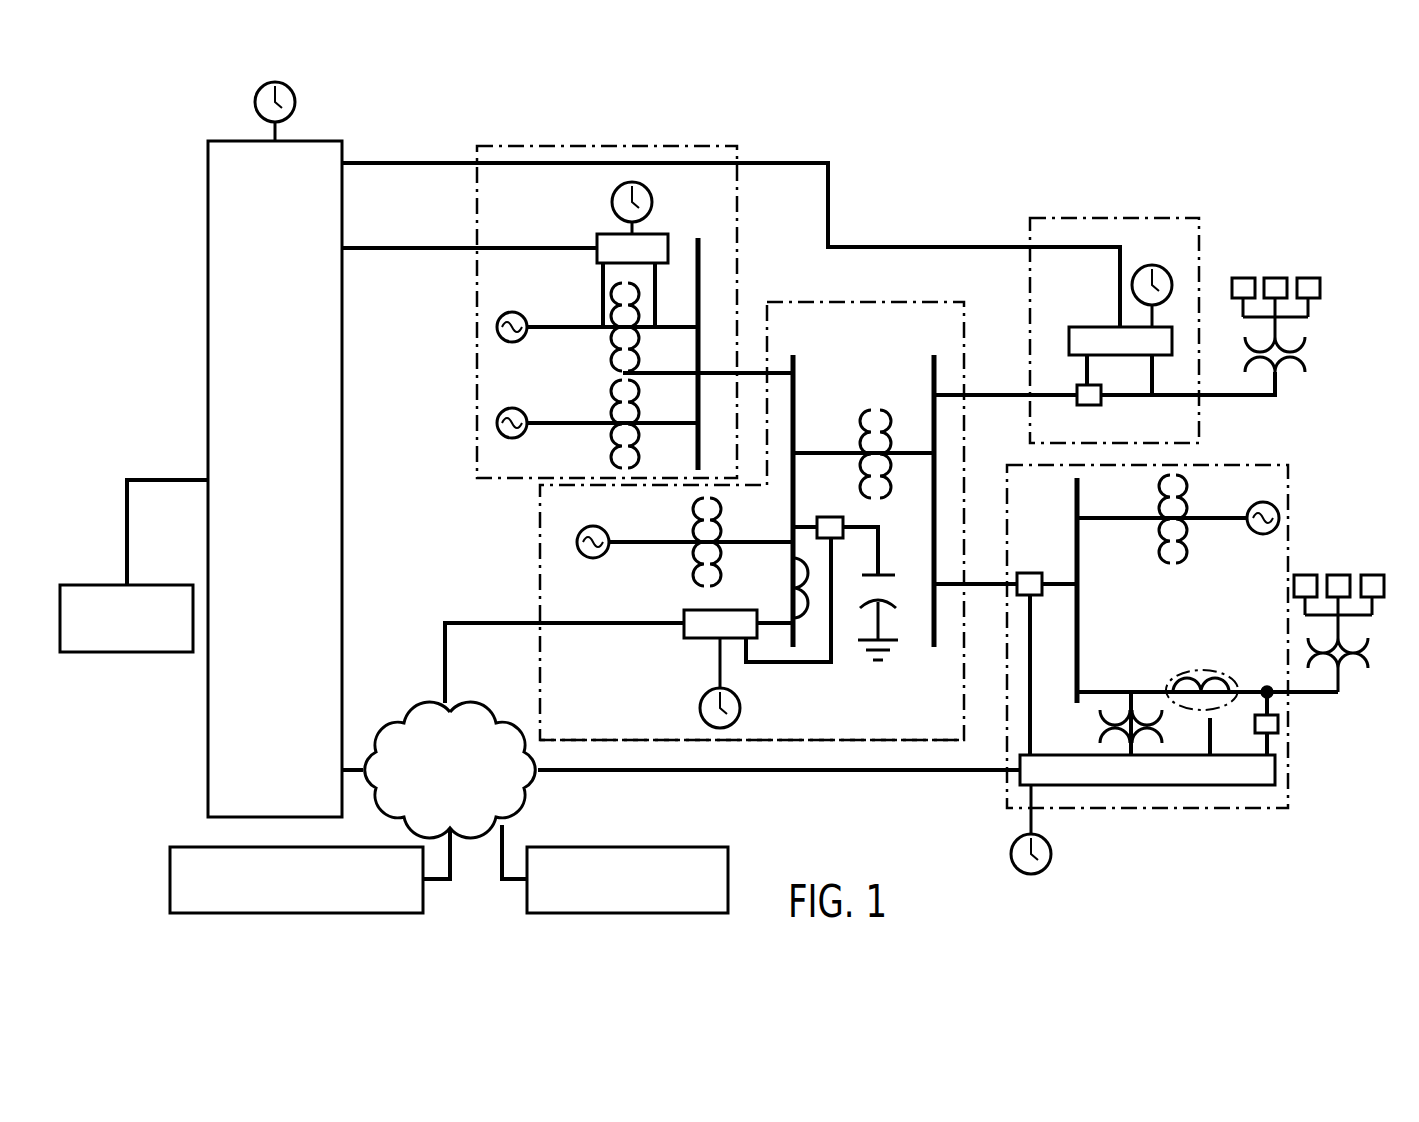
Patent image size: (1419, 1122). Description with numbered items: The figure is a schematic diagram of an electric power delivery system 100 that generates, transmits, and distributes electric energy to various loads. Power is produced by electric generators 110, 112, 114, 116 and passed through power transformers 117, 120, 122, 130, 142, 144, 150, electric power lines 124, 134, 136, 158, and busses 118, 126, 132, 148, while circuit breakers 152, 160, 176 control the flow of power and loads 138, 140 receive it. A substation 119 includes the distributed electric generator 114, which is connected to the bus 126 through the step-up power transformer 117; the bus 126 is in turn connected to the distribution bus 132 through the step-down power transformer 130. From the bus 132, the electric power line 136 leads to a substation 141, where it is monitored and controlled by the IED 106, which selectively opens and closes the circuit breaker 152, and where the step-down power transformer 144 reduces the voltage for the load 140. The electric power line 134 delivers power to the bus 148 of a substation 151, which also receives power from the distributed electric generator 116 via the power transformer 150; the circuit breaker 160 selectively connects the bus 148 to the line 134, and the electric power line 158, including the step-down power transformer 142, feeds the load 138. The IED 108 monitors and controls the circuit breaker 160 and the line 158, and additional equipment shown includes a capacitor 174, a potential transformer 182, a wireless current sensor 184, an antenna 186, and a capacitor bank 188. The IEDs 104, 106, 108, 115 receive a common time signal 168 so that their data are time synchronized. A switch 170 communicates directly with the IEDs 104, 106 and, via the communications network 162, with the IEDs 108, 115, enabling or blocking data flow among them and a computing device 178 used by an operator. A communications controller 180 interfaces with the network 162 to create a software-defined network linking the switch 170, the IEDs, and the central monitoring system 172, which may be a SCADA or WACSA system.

The electric power delivery system 100 is at (1276, 134).
The IED 104 is at (600, 234).
The IED 106 is at (1075, 327).
The IED 108 is at (1205, 785).
The electric generator 110 is at (512, 312).
The electric generator 112 is at (512, 408).
The electric generator 114 is at (600, 525).
The IED 115 is at (726, 610).
The electric generator 116 is at (1253, 533).
The power transformer 117 is at (697, 575).
The bus 118 is at (700, 241).
The substation 119 is at (540, 576).
The power transformer 120 is at (610, 355).
The power transformer 122 is at (610, 458).
The electric power line 124 is at (750, 372).
The bus 126 is at (795, 385).
The power transformer 130 is at (870, 410).
The bus 132 is at (931, 645).
The electric power line 134 is at (976, 590).
The electric power line 136 is at (1050, 398).
The load 138 is at (1338, 575).
The load 140 is at (1311, 278).
The substation 141 is at (1051, 218).
The power transformer 142 is at (1352, 660).
The power transformer 144 is at (1300, 355).
The bus 148 is at (1077, 481).
The power transformer 150 is at (1186, 466).
The substation 151 is at (1268, 809).
The circuit breaker 152 is at (1092, 405).
The electric power line 158 is at (1312, 700).
The circuit breaker 160 is at (1040, 573).
The communications network 162 is at (394, 713).
The common time signal 168 is at (296, 105).
The switch 170 is at (342, 478).
The central monitoring system 172 is at (170, 873).
The capacitor 174 is at (892, 572).
The circuit breaker 176 is at (828, 517).
The computing device 178 is at (125, 652).
The communications controller 180 is at (612, 847).
The potential transformer 182 is at (1108, 727).
The wireless current sensor 184 is at (1196, 675).
The antenna 186 is at (1210, 724).
The capacitor bank 188 is at (1279, 723).